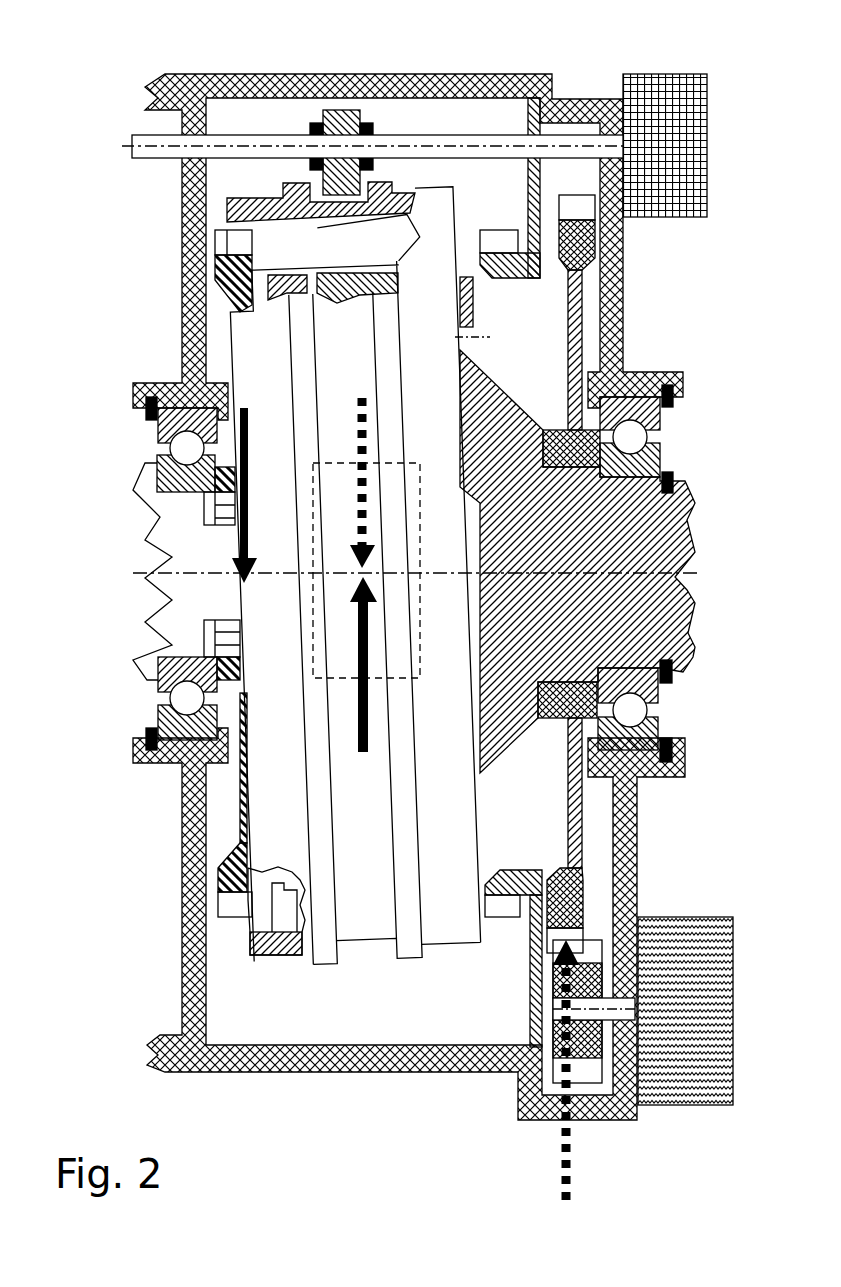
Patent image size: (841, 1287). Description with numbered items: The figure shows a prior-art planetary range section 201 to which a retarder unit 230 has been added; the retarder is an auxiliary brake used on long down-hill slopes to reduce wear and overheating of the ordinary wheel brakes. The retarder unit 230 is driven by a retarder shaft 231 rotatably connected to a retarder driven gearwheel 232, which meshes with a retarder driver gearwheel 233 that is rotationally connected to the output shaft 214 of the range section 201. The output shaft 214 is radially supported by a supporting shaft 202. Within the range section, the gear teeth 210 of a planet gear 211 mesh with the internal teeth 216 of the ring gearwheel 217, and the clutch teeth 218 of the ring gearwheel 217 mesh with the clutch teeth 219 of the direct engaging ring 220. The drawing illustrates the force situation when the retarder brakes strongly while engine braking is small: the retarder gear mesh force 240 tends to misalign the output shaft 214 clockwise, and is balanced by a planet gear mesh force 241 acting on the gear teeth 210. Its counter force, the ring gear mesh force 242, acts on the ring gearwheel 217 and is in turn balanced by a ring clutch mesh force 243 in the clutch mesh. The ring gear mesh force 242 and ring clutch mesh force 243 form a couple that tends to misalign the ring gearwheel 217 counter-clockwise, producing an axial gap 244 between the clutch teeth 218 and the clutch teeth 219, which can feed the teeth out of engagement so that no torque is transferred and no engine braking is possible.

The range section 201 is at (200, 62).
The supporting shaft 202 is at (192, 550).
The gear teeth 210 is at (372, 250).
The planet gear 211 is at (308, 610).
The output shaft 214 is at (665, 527).
The internal teeth 216 is at (275, 245).
The ring gearwheel 217 is at (285, 812).
The clutch teeth 218 is at (222, 226).
The clutch teeth 219 is at (215, 245).
The direct engaging ring 220 is at (238, 278).
The retarder unit 230 is at (687, 1070).
The retarder shaft 231 is at (613, 1013).
The retarder driven gearwheel 232 is at (603, 973).
The retarder driver gearwheel 233 is at (568, 900).
The retarder gear mesh force 240 is at (563, 1165).
The planet gear mesh force 241 is at (357, 407).
The ring gear mesh force 242 is at (358, 740).
The ring clutch mesh force 243 is at (240, 538).
The axial gap 244 is at (263, 898).